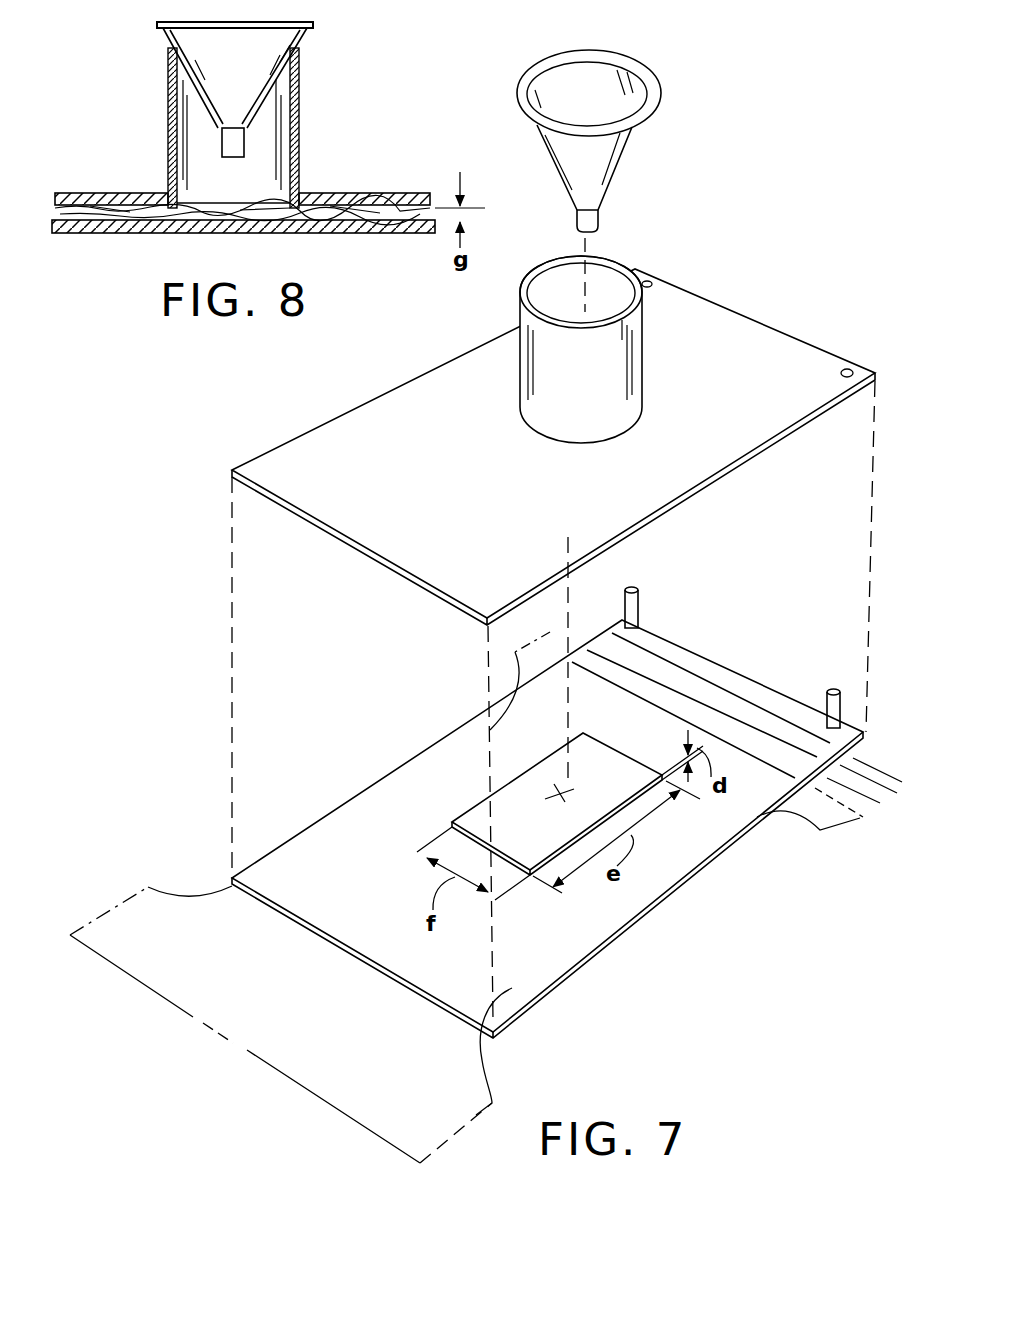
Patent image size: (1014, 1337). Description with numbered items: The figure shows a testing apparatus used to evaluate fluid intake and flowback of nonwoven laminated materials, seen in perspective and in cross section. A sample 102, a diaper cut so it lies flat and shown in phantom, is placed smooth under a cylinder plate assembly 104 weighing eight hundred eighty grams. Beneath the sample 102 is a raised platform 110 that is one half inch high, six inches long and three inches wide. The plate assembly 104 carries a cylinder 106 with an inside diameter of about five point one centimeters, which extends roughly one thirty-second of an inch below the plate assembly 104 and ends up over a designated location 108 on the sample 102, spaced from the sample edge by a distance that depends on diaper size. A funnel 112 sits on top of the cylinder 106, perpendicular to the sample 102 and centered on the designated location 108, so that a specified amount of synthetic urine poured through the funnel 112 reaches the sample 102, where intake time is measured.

In FIG. 7, the sample 102 is at (192, 990).
In FIG. 8, the cylinder plate assembly 104 is at (45, 203).
In FIG. 7, the cylinder plate assembly 104 is at (318, 445).
In FIG. 8, the cylinder 106 is at (300, 122).
In FIG. 7, the cylinder 106 is at (623, 337).
In FIG. 7, the designated location 108 is at (576, 792).
In FIG. 7, the raised platform 110 is at (466, 804).
In FIG. 8, the funnel 112 is at (307, 33).
In FIG. 7, the funnel 112 is at (633, 70).